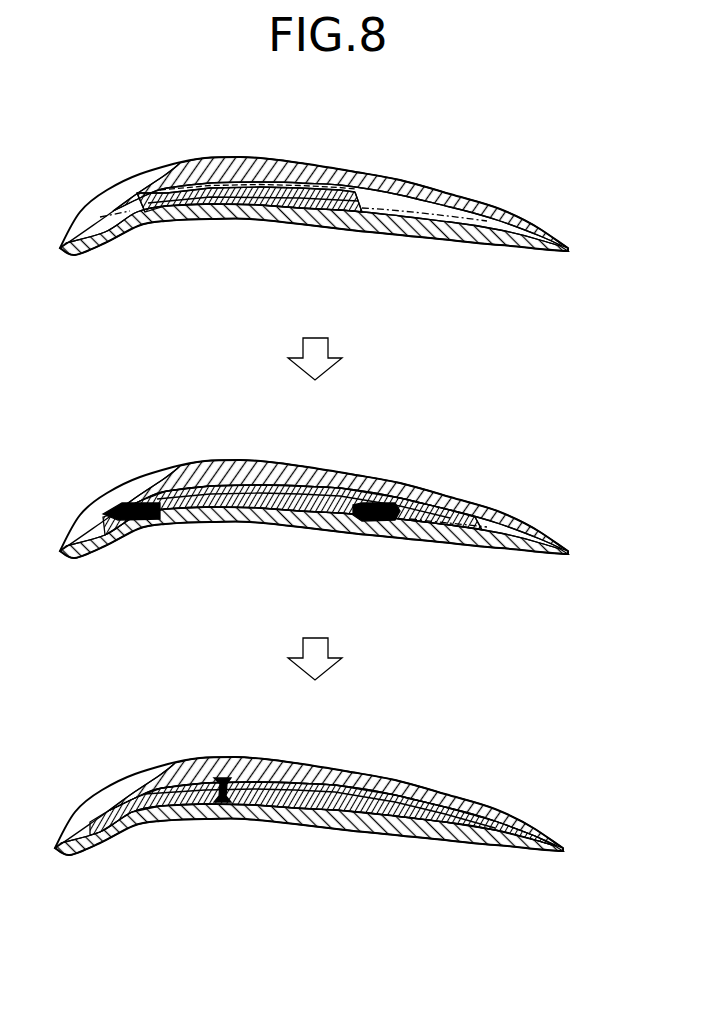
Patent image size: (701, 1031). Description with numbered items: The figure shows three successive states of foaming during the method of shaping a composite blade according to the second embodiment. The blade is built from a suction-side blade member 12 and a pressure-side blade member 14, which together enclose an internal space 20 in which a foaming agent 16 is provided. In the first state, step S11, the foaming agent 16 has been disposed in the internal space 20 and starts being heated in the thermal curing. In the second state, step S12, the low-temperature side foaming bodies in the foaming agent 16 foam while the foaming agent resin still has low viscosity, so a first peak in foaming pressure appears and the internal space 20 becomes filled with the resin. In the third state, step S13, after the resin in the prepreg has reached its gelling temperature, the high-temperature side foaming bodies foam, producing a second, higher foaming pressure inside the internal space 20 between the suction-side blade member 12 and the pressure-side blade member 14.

The suction-side blade member 12 is at (104, 188).
The pressure-side blade member 14 is at (105, 247).
The foaming agent 16 is at (166, 188).
The internal space 20 is at (197, 184).
The step S11 is at (324, 208).
The step S12 is at (573, 462).
The step S13 is at (573, 762).